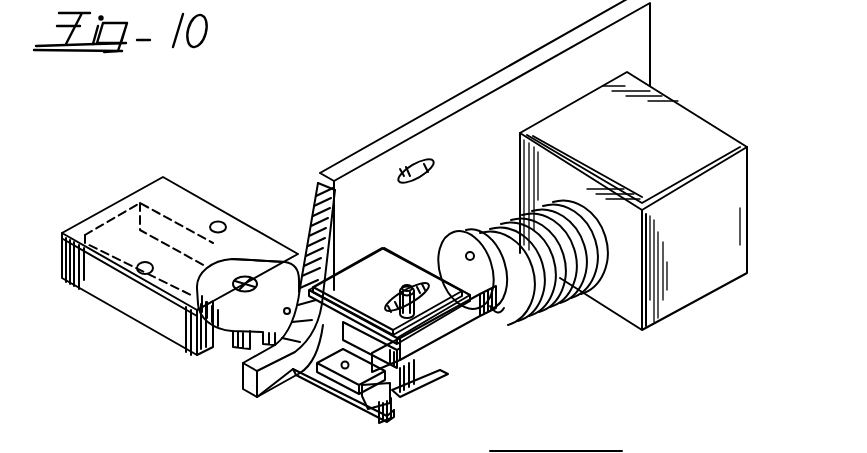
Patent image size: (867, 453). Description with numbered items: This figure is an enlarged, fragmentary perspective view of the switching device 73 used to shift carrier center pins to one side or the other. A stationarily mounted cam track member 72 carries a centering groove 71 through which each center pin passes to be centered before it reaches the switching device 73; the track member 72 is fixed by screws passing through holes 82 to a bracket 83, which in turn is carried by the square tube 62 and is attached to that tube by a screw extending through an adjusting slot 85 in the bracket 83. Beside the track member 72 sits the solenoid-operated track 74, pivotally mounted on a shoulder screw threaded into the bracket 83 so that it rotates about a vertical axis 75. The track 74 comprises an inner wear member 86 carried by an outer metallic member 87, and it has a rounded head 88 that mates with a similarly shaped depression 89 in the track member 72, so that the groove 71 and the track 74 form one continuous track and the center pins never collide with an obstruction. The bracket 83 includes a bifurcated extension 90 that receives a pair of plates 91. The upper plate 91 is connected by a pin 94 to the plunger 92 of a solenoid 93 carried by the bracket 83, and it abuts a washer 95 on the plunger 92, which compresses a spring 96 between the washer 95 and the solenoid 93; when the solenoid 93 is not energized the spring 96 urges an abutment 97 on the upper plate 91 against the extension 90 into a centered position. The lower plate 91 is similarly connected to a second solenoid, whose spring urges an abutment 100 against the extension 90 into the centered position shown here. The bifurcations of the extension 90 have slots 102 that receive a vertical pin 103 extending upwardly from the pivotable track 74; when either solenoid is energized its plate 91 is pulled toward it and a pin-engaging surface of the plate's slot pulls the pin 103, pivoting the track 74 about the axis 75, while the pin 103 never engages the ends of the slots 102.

The square tube 62 is at (560, 451).
The centering groove 71 is at (124, 214).
The cam track member 72 is at (128, 194).
The switching device 73 is at (306, 346).
The solenoid-operated track 74 is at (318, 409).
The vertical axis 75 is at (254, 283).
The holes 82 is at (218, 221).
The bracket 83 is at (493, 73).
The adjusting slot 85 is at (418, 176).
The inner wear member 86 is at (383, 408).
The outer metallic member 87 is at (360, 405).
The rounded head 88 is at (232, 277).
The depression 89 is at (238, 258).
The bifurcated extension 90 is at (352, 270).
The plates 91 is at (468, 322).
The plunger 92 is at (458, 266).
The solenoid 93 is at (682, 118).
The pin 94 is at (471, 252).
The washer 95 is at (499, 313).
The spring 96 is at (540, 289).
The abutment 97 is at (430, 270).
The abutment 100 is at (390, 405).
The slots 102 is at (394, 303).
The vertical pin 103 is at (401, 285).